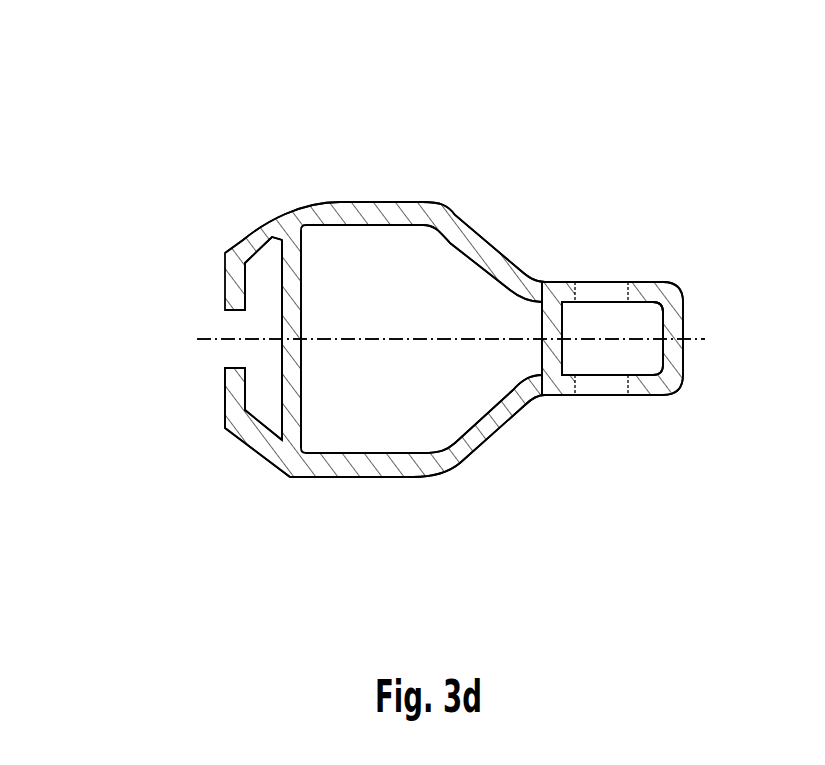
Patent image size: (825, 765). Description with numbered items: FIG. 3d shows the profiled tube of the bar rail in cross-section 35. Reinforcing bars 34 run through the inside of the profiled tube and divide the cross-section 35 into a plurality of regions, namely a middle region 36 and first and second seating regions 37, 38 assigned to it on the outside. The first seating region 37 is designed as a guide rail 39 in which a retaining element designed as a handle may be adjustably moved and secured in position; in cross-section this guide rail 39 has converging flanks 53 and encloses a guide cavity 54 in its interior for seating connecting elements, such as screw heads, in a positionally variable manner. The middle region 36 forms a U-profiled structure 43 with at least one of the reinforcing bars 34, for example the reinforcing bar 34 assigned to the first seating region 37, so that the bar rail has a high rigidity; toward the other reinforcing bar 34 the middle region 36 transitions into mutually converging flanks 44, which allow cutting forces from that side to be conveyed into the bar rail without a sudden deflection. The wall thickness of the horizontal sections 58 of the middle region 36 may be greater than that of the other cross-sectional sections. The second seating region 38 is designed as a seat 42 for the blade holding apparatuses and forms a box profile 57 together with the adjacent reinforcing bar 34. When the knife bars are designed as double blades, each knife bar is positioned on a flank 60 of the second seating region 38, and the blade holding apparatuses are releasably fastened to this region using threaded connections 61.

The reinforcing bar 34 is at (292, 420).
The cross-section 35 is at (393, 170).
The middle region 36 is at (371, 390).
The first seating region 37 is at (263, 340).
The second seating region 38 is at (628, 338).
The guide rail 39 is at (389, 373).
The seat 42 is at (670, 368).
The U-profiled structure 43 is at (318, 248).
The converging flanks 44 is at (500, 203).
The converging flanks 53 is at (247, 245).
The guide cavity 54 is at (255, 290).
The box profile 57 is at (652, 232).
The horizontal sections 58 is at (323, 207).
The flank 60 is at (583, 257).
The threaded connections 61 is at (607, 287).